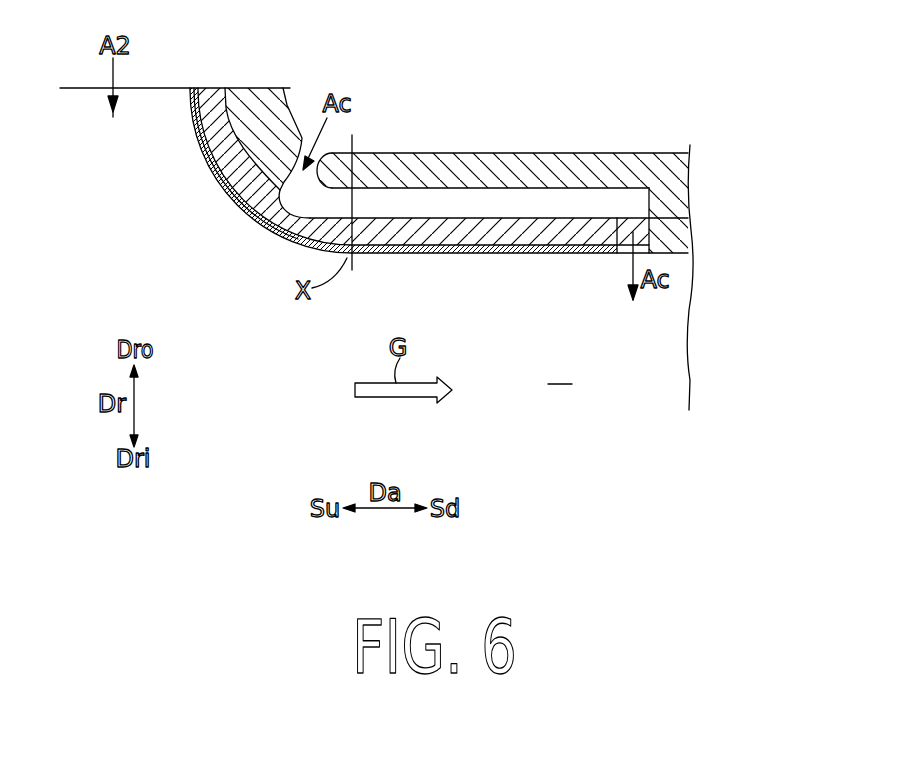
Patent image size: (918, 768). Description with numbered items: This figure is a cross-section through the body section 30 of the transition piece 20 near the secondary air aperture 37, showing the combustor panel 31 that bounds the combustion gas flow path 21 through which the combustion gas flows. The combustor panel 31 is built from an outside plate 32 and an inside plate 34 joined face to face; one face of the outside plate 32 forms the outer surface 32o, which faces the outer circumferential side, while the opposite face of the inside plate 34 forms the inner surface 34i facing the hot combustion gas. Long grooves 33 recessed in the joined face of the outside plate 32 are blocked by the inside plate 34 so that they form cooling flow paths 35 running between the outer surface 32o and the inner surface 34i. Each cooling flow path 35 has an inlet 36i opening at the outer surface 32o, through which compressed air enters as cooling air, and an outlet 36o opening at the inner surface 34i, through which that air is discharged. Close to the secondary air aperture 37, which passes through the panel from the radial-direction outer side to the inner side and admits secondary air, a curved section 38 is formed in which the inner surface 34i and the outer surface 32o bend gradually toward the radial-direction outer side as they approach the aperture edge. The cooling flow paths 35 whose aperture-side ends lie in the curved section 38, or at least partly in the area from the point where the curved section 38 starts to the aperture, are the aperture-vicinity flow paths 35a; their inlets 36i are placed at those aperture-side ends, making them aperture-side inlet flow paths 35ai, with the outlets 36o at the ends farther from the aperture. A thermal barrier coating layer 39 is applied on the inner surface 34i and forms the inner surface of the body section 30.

The transition piece 20 is at (441, 212).
The body section 30 is at (441, 212).
The combustor panel 31 is at (566, 202).
The outside plate 32 is at (544, 163).
The outer surface 32o is at (430, 152).
The long groove 33 is at (512, 198).
The inside plate 34 is at (541, 259).
The inner surface 34i is at (405, 250).
The cooling flow path 35 is at (439, 212).
The aperture-vicinity flow path 35a is at (439, 212).
The aperture-side inlet flow path 35ai is at (458, 202).
The inlet 36i is at (350, 130).
The outlet 36o is at (625, 252).
The secondary air aperture 37 is at (193, 88).
The curved section 38 is at (222, 177).
The thermal barrier coating layer 39 is at (696, 252).
The combustion gas flow path 21 is at (560, 373).